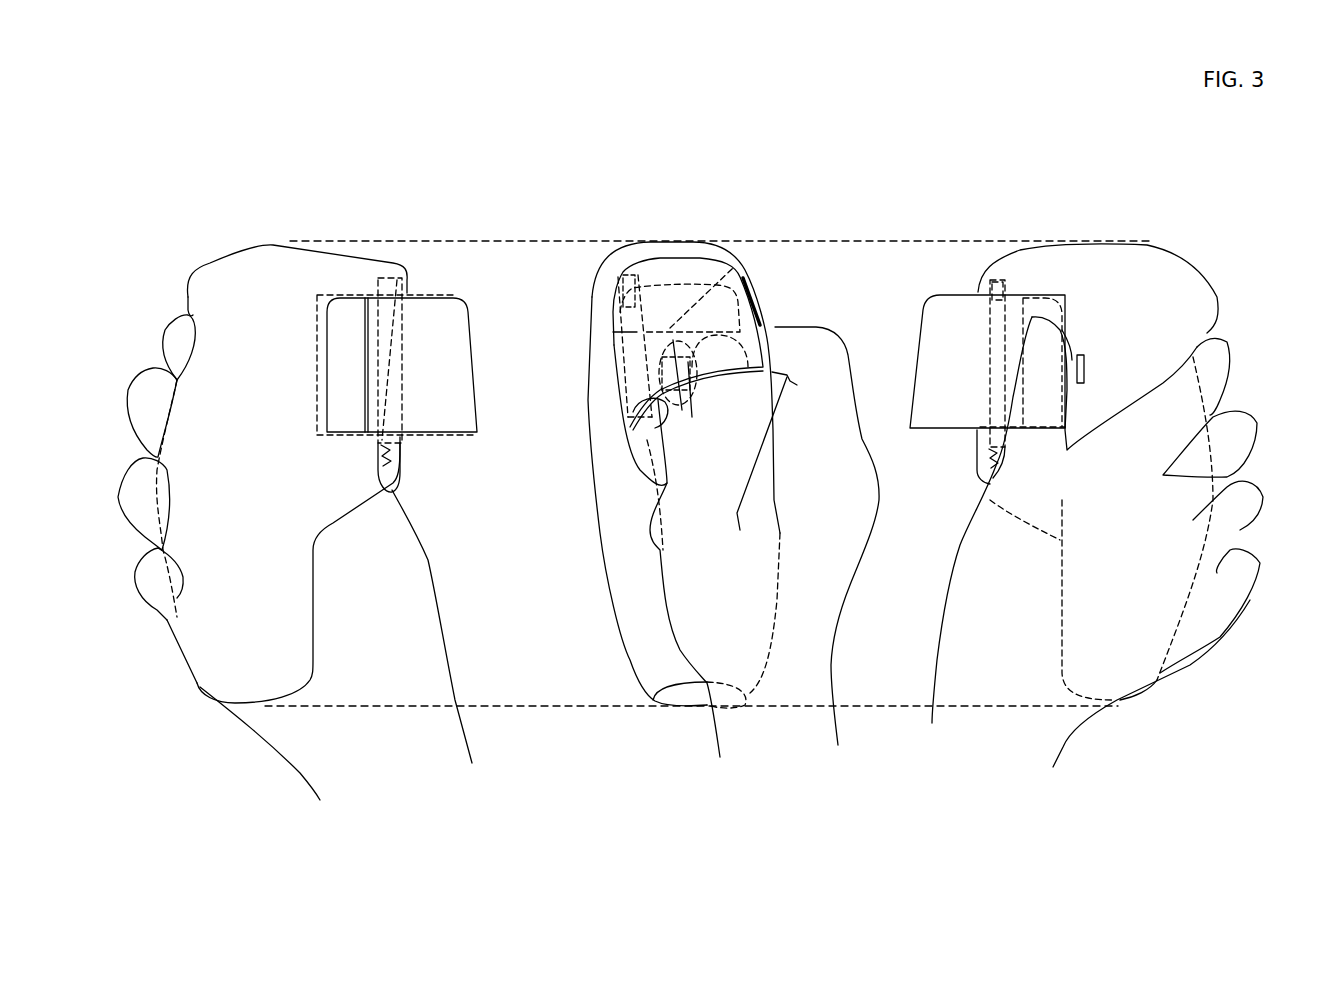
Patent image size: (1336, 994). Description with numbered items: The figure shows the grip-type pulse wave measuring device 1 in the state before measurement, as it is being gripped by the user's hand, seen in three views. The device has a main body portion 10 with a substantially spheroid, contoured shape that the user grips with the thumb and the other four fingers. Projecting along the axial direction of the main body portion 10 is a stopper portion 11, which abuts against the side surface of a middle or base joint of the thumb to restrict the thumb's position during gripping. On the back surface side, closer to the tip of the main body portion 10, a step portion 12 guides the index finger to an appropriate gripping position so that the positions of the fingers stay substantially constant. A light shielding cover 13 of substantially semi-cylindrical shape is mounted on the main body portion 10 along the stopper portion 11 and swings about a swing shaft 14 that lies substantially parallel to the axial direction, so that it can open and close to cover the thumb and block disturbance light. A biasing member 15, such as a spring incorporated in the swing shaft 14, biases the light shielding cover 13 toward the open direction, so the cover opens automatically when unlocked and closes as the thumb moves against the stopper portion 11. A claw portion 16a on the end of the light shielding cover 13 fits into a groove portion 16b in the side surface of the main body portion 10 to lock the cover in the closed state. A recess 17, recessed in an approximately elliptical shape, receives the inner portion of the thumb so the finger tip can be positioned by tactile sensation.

The grip-type pulse wave measuring device 1 is at (725, 186).
The main body portion 10 is at (197, 638).
The stopper portion 11 is at (352, 502).
The step portion 12 is at (178, 307).
The light shielding cover 13 is at (450, 433).
The swing shaft 14 is at (393, 353).
The biasing member 15 is at (393, 477).
The claw portion 16a is at (753, 298).
The groove portion 16b is at (1087, 368).
The recess 17 is at (1072, 353).